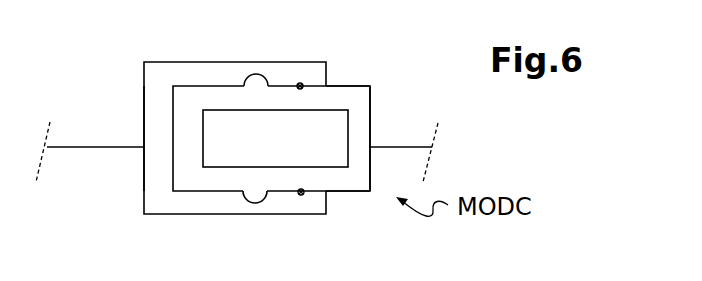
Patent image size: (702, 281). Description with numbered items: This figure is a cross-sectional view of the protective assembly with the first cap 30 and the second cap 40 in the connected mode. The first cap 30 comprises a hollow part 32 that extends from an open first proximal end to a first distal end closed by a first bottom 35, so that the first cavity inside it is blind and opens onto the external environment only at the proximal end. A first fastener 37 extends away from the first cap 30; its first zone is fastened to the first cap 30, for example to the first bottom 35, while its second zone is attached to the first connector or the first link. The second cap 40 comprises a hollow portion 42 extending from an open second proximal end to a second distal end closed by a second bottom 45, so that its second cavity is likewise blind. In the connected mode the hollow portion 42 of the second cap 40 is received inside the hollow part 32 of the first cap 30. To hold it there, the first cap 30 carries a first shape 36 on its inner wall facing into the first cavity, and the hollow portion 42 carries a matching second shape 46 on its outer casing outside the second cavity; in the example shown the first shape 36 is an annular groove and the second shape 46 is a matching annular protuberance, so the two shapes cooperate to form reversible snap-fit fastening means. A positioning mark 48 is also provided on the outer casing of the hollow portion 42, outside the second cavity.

The first cap 30 is at (247, 141).
The hollow part 32 is at (200, 215).
The first bottom 35 is at (158, 165).
The first shape 36 is at (250, 204).
The first fastener 37 is at (74, 147).
The second cap 40 is at (384, 77).
The hollow portion 42 is at (340, 97).
The second bottom 45 is at (363, 131).
The second shape 46 is at (256, 82).
The positioning mark 48 is at (301, 195).